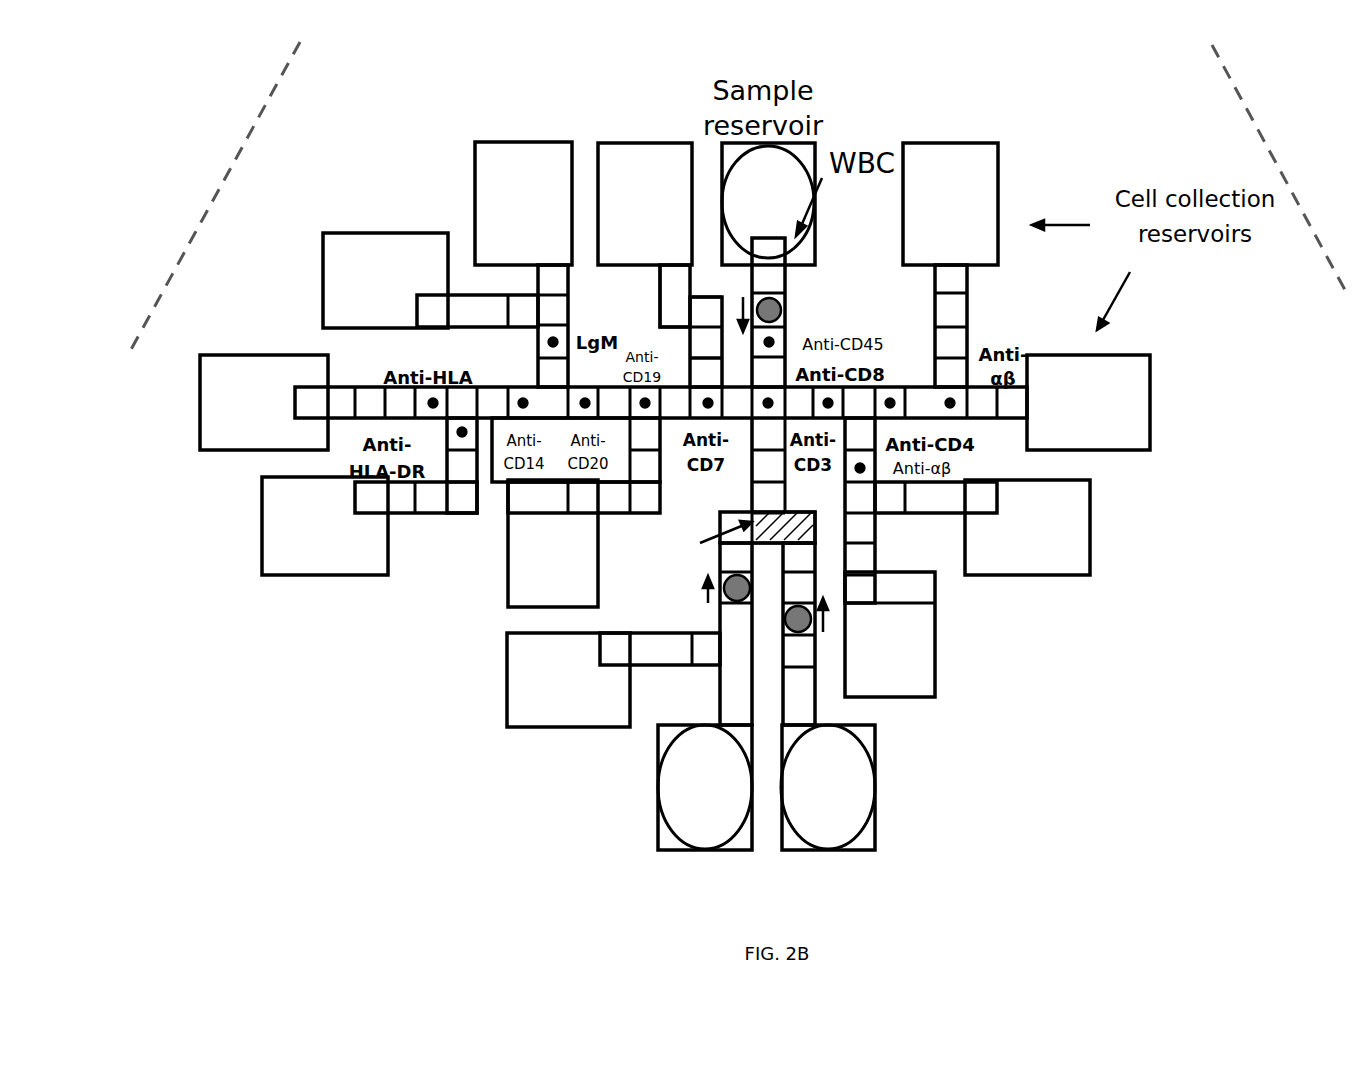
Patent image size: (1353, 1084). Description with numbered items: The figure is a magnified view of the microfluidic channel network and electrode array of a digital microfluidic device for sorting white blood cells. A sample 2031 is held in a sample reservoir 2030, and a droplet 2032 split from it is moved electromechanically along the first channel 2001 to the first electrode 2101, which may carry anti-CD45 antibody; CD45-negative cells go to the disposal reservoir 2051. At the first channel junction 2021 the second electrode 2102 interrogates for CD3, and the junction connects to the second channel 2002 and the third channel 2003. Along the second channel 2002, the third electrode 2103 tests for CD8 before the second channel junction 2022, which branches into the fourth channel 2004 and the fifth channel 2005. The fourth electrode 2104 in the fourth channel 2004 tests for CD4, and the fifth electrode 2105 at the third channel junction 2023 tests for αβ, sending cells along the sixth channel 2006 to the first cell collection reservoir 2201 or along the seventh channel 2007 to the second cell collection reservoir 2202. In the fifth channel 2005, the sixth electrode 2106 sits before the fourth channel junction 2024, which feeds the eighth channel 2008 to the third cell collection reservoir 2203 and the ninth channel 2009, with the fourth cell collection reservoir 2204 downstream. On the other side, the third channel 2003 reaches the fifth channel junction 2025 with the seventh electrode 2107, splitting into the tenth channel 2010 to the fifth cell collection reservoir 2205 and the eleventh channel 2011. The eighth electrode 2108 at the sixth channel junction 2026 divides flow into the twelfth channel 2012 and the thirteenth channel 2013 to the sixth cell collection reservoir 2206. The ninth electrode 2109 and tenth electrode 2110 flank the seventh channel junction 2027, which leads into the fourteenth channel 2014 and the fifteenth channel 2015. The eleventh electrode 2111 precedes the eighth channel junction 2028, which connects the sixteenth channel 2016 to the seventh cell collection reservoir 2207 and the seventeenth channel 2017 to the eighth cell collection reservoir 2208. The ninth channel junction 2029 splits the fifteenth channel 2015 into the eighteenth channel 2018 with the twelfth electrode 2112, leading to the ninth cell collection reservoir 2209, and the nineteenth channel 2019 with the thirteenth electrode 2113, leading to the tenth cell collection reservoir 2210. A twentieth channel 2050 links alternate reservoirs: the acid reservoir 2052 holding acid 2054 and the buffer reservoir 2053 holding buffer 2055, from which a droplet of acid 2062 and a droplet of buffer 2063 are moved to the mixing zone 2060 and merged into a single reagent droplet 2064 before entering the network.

The first channel 2001 is at (788, 285).
The second channel 2002 is at (830, 400).
The third channel 2003 is at (748, 420).
The fourth channel 2004 is at (907, 402).
The fifth channel 2005 is at (880, 482).
The sixth channel 2006 is at (968, 322).
The seventh channel 2007 is at (1007, 422).
The eighth channel 2008 is at (968, 478).
The ninth channel 2009 is at (880, 545).
The tenth channel 2010 is at (660, 312).
The eleventh channel 2011 is at (690, 420).
The twelfth channel 2012 is at (632, 386).
The thirteenth channel 2013 is at (617, 513).
The fourteenth channel 2014 is at (572, 348).
The fifteenth channel 2015 is at (507, 420).
The sixteenth channel 2016 is at (575, 265).
The seventeenth channel 2017 is at (432, 330).
The eighteenth channel 2018 is at (380, 387).
The nineteenth channel 2019 is at (460, 512).
The first channel junction 2021 is at (800, 387).
The second channel junction 2022 is at (880, 422).
The third channel junction 2023 is at (965, 405).
The fourth channel junction 2024 is at (815, 500).
The fifth channel junction 2025 is at (722, 515).
The sixth channel junction 2026 is at (668, 380).
The seventh channel junction 2027 is at (556, 393).
The eighth channel junction 2028 is at (566, 312).
The ninth channel junction 2029 is at (463, 398).
The sample reservoir 2030 is at (812, 147).
The sample 2031 is at (795, 236).
The droplet 2032 is at (785, 310).
The twentieth channel 2050 is at (788, 497).
The disposal reservoir 2051 is at (518, 712).
The acid reservoir 2052 is at (660, 840).
The buffer reservoir 2053 is at (868, 735).
The acid 2054 is at (668, 790).
The buffer 2055 is at (872, 782).
The mixing zone 2060 is at (710, 530).
The droplet of acid 2062 is at (722, 590).
The droplet of buffer 2063 is at (808, 625).
The reagent droplet 2064 is at (808, 545).
The first electrode 2101 is at (775, 340).
The second electrode 2102 is at (766, 398).
The third electrode 2103 is at (890, 400).
The fourth electrode 2104 is at (903, 400).
The fifth electrode 2105 is at (955, 400).
The sixth electrode 2106 is at (905, 488).
The seventh electrode 2107 is at (706, 408).
The eighth electrode 2108 is at (645, 400).
The ninth electrode 2109 is at (585, 410).
The tenth electrode 2110 is at (523, 410).
The eleventh electrode 2111 is at (548, 342).
The twelfth electrode 2112 is at (433, 398).
The thirteenth electrode 2113 is at (458, 432).
The first cell collection reservoir 2201 is at (990, 157).
The second cell collection reservoir 2202 is at (1130, 380).
The third cell collection reservoir 2203 is at (1078, 510).
The fourth cell collection reservoir 2204 is at (932, 665).
The fifth cell collection reservoir 2205 is at (623, 143).
The sixth cell collection reservoir 2206 is at (520, 585).
The seventh cell collection reservoir 2207 is at (485, 165).
The eighth cell collection reservoir 2208 is at (335, 268).
The ninth cell collection reservoir 2209 is at (215, 428).
The tenth cell collection reservoir 2210 is at (275, 560).